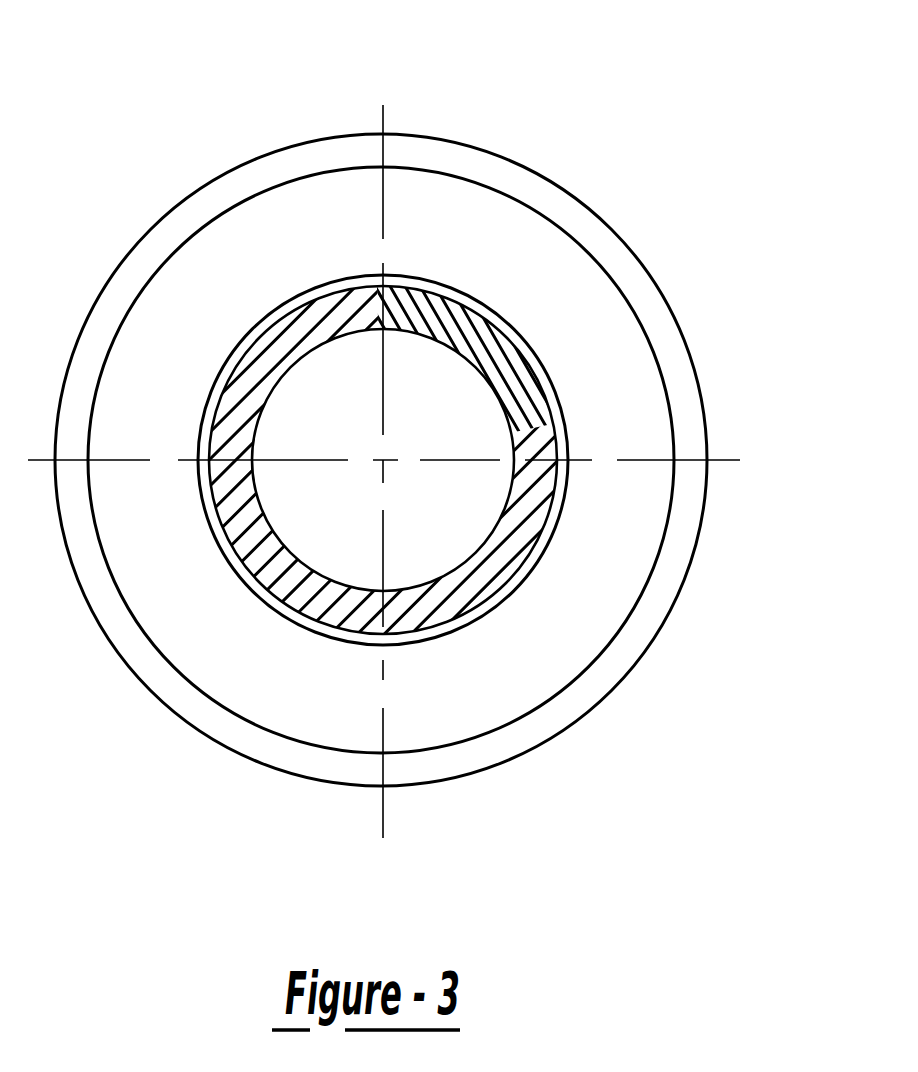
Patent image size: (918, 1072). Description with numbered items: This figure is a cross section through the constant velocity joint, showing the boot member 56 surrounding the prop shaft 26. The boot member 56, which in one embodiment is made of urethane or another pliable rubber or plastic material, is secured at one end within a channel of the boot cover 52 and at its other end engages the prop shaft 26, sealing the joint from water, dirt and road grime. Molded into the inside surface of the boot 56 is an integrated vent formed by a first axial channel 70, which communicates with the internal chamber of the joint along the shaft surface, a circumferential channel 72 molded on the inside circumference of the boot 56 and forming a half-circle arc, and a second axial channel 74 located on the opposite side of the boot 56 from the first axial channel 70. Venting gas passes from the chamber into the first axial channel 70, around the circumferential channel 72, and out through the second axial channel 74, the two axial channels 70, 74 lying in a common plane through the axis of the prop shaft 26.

The prop shaft 26 is at (435, 520).
The boot cover 52 is at (538, 186).
The boot member 56 is at (608, 380).
The first axial channel 70 is at (377, 600).
The circumferential channel 72 is at (474, 345).
The second axial channel 74 is at (406, 296).